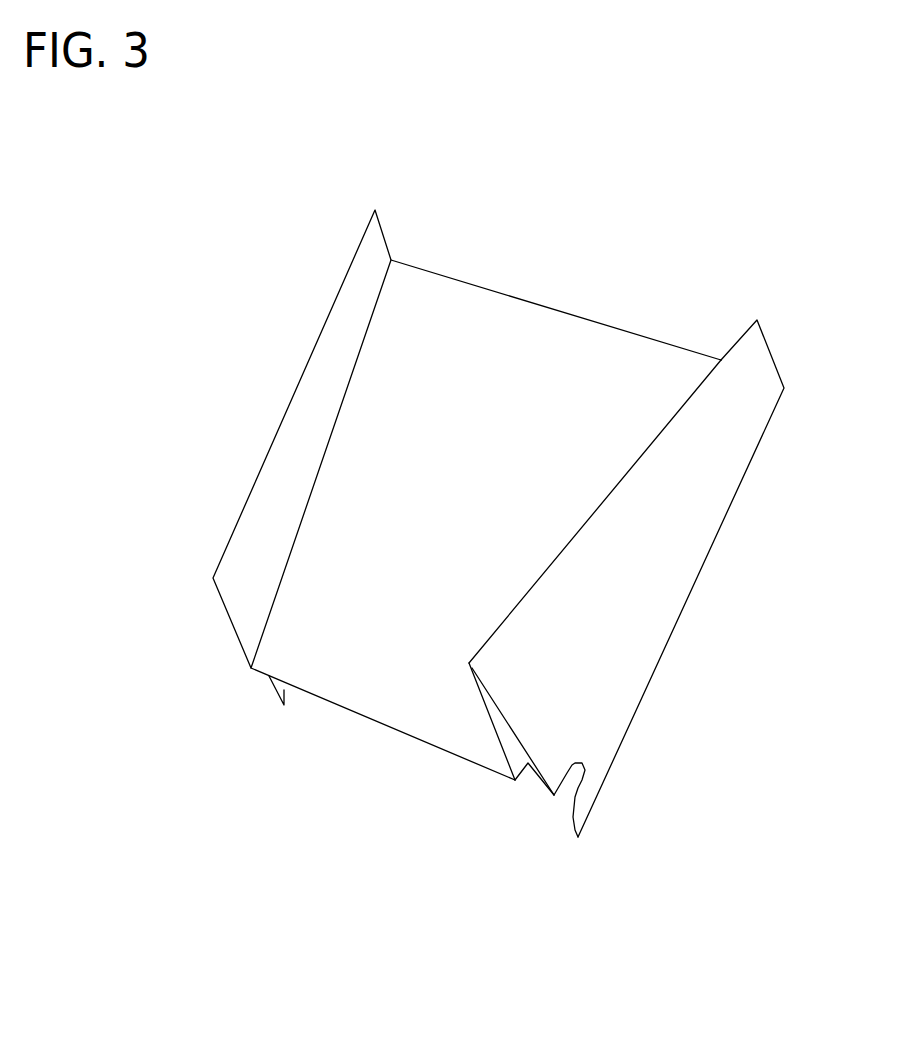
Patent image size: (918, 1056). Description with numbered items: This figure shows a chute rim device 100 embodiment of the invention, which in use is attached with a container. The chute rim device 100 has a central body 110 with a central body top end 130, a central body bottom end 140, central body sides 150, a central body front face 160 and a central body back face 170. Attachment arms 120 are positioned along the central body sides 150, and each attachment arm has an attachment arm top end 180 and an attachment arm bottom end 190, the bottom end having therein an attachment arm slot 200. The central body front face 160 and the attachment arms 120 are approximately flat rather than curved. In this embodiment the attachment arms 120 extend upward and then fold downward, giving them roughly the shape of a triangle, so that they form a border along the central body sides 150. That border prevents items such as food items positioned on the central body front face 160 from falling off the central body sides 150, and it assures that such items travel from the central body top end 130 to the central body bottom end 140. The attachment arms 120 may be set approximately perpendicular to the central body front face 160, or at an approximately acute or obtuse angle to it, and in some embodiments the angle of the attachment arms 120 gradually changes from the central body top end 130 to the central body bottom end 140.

The chute rim device 100 is at (170, 439).
The central body 110 is at (515, 359).
The attachment arms 120 is at (210, 546).
The central body top end 130 is at (677, 391).
The central body bottom end 140 is at (483, 751).
The central body sides 150 is at (385, 447).
The central body front face 160 is at (395, 306).
The central body back face 170 is at (440, 256).
The attachment arm top end 180 is at (363, 339).
The attachment arm bottom end 190 is at (265, 611).
The attachment arm slot 200 is at (550, 813).